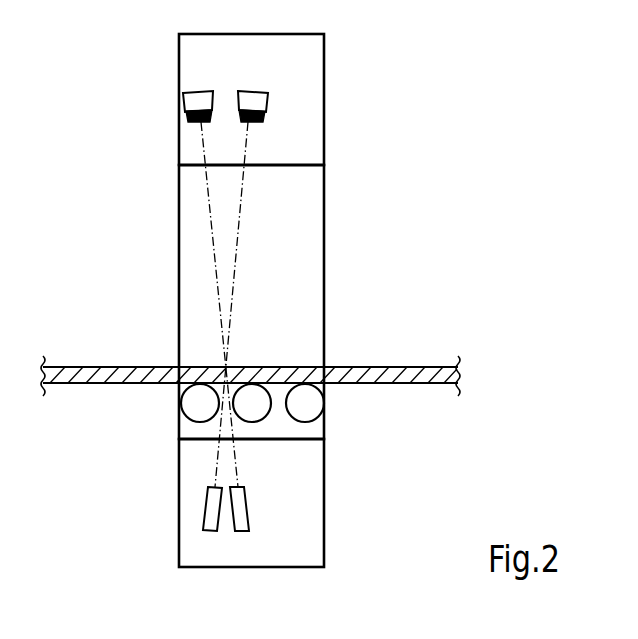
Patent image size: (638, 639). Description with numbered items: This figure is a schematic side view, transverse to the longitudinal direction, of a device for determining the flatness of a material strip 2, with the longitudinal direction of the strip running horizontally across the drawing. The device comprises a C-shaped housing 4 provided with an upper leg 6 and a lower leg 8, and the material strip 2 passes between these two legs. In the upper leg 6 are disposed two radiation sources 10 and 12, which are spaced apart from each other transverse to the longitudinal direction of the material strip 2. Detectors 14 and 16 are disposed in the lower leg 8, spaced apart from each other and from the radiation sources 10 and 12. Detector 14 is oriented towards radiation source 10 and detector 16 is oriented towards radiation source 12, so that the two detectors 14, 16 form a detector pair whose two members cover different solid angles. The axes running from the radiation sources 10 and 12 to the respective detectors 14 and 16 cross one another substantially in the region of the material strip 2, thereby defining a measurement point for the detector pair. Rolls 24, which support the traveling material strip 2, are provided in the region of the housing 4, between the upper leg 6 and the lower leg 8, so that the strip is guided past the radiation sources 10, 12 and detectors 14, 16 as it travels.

The material strip 2 is at (392, 380).
The housing 4 is at (305, 242).
The upper leg 6 is at (305, 70).
The lower leg 8 is at (302, 480).
The radiation source 10 is at (193, 103).
The radiation source 12 is at (258, 102).
The detector 14 is at (240, 520).
The detector 16 is at (213, 520).
The rolls 24 is at (193, 405).